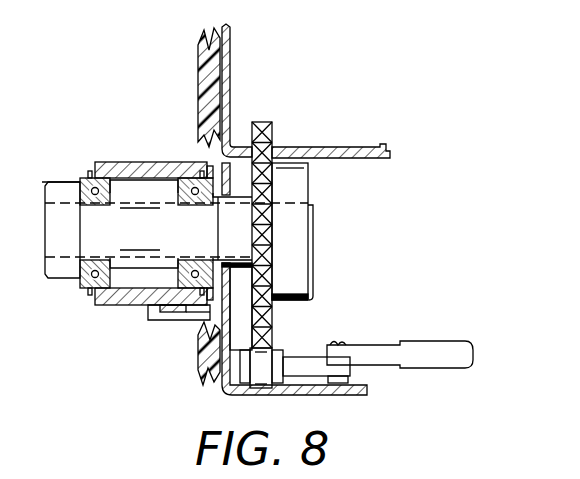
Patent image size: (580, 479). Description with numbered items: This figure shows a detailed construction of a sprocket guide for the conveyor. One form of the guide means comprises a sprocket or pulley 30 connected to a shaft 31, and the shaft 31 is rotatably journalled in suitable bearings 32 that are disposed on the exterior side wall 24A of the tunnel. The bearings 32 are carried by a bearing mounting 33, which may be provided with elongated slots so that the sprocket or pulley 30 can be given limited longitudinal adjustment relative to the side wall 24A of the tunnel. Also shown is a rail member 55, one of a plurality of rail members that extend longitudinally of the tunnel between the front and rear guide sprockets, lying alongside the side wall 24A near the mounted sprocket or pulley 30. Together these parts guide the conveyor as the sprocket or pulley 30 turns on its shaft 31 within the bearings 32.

The exterior side wall 24A is at (198, 73).
The rail member 55 is at (232, 58).
The bearings 32 is at (92, 182).
The shaft 31 is at (313, 224).
The sprocket or pulley 30 is at (272, 316).
The bearing mounting 33 is at (165, 320).